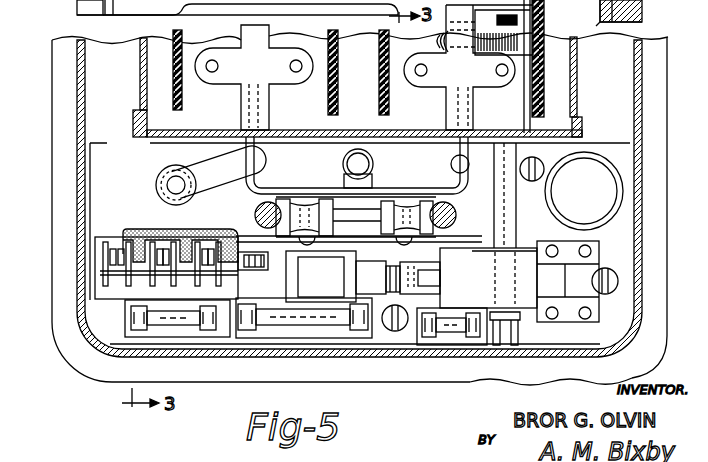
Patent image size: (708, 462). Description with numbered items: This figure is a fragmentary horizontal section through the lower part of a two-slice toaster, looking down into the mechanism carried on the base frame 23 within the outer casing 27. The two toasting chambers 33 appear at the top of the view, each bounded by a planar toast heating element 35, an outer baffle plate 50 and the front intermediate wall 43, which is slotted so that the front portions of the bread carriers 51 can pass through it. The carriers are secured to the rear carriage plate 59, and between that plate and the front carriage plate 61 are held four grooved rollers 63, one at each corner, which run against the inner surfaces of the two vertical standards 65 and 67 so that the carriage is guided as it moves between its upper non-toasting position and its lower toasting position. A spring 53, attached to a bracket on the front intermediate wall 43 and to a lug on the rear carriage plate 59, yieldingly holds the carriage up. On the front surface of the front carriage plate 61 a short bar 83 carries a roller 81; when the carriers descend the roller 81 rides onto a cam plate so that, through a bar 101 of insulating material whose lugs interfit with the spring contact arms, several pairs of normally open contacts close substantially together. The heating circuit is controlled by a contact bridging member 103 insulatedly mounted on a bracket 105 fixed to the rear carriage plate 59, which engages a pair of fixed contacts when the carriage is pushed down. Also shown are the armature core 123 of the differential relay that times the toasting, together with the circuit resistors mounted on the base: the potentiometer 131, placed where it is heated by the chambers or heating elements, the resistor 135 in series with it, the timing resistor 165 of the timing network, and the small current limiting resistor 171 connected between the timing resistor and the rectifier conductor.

The base frame 23 is at (50, 230).
The outer casing 27 is at (645, 108).
The toasting chamber 33 is at (355, 67).
The planar toast heating element 35 is at (179, 52).
The front intermediate wall 43 is at (158, 137).
The outer baffle plate 50 is at (141, 60).
The bread carrier 51 is at (270, 101).
The spring 53 is at (373, 160).
The rear carriage plate 59 is at (286, 187).
The front carriage plate 61 is at (359, 221).
The grooved roller 63 is at (330, 211).
The vertical standard 65 is at (255, 217).
The vertical standard 67 is at (456, 207).
The roller 81 is at (278, 270).
The short bar 83 is at (343, 276).
The bar of electric-insulating material 101 is at (135, 229).
The contact bridging member 103 is at (156, 175).
The bracket 105 is at (212, 189).
The armature core 123 is at (435, 276).
The potentiometer 131 is at (438, 38).
The resistor 135 is at (170, 330).
The timing resistor 165 is at (298, 330).
The current limiting resistor 171 is at (456, 338).